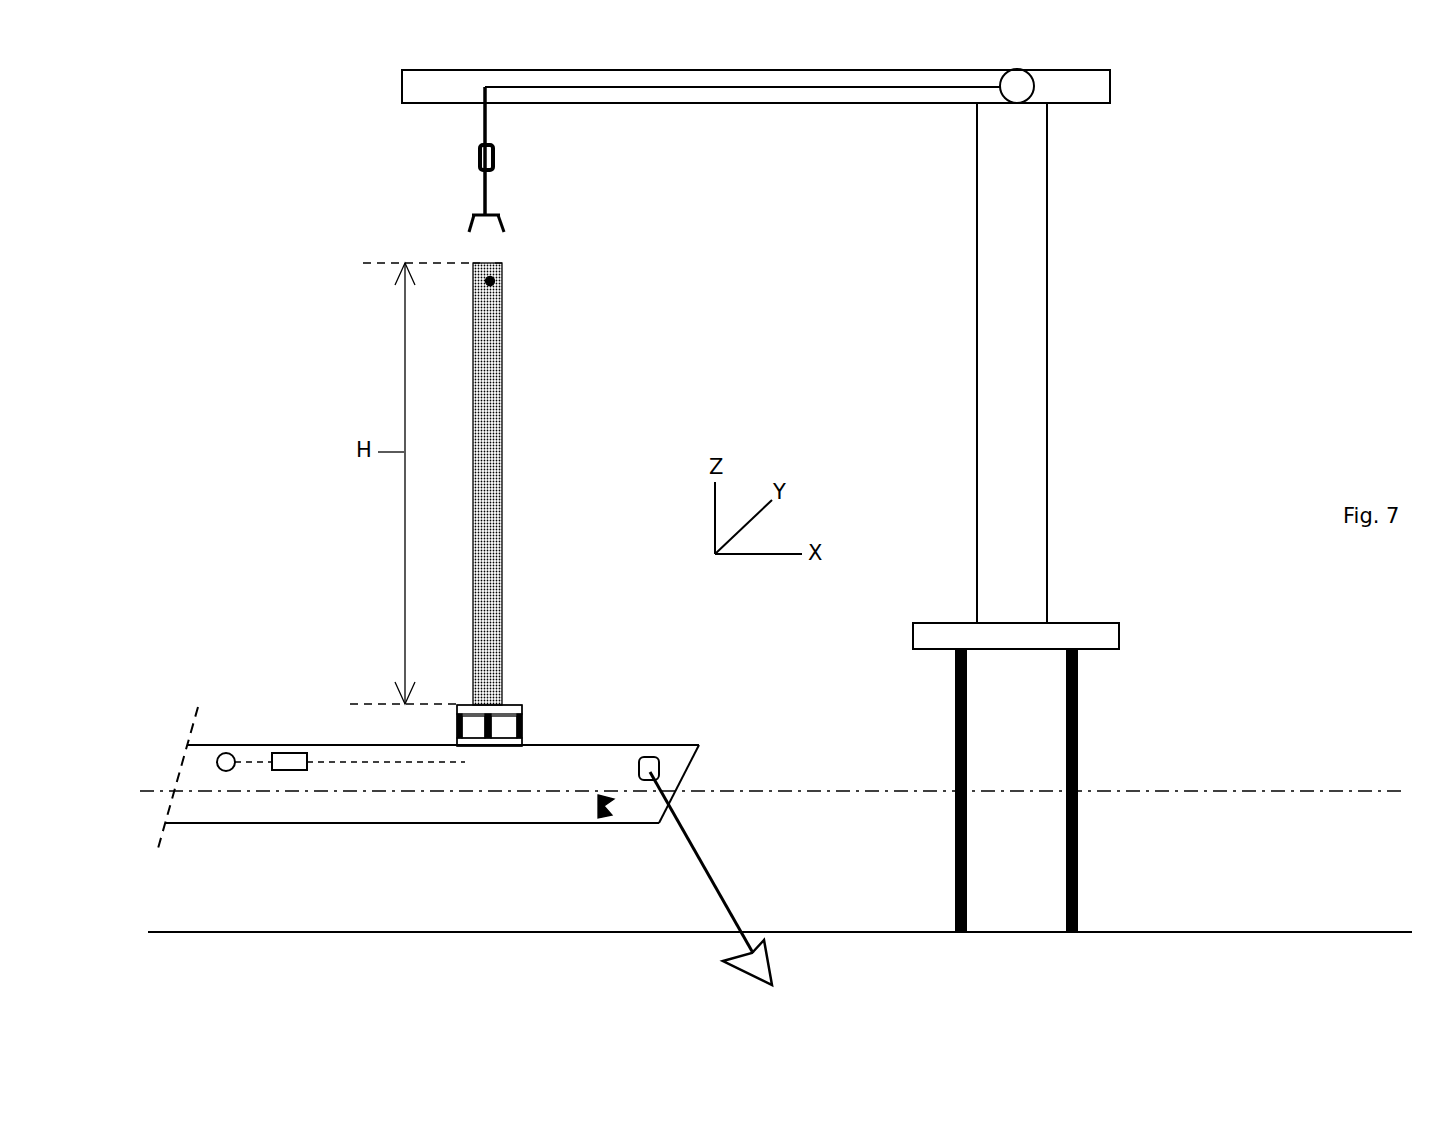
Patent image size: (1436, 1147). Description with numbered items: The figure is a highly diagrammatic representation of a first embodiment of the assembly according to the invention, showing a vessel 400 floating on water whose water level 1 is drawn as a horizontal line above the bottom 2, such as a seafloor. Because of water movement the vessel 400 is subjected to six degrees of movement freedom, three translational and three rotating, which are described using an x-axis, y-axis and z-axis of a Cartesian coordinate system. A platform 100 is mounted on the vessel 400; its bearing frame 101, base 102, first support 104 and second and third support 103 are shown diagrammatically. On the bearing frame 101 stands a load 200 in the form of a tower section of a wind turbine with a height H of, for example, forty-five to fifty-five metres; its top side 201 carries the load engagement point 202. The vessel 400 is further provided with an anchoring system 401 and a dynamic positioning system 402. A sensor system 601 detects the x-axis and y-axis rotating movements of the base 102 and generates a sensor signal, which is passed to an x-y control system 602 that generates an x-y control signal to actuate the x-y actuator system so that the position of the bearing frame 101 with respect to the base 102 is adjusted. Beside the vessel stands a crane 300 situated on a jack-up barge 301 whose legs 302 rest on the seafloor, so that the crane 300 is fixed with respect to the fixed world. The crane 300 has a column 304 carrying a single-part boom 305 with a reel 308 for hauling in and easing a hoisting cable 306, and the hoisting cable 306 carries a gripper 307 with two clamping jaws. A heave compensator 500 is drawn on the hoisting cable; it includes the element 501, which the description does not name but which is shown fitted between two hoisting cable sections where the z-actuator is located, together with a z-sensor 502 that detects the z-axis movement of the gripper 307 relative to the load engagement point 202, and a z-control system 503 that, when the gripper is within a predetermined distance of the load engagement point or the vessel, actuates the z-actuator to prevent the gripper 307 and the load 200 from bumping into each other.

The water level 1 is at (1300, 788).
The bottom 2 is at (1242, 935).
The platform 100 is at (506, 765).
The bearing frame 101 is at (513, 703).
The base 102 is at (563, 711).
The second and third support 103 is at (525, 733).
The first support 104 is at (480, 729).
The load 200 is at (451, 454).
The top side 201 is at (366, 234).
The load engagement point 202 is at (565, 242).
The crane 300 is at (842, 500).
The jack-up barge 301 is at (1107, 630).
The legs 302 is at (1078, 717).
The column 304 is at (1048, 228).
The single-part boom 305 is at (1102, 87).
The hoisting cable 306 is at (742, 88).
The gripper 307 is at (507, 217).
The reel 308 is at (1118, 110).
The vessel 400 is at (508, 779).
The anchoring system 401 is at (763, 968).
The dynamic positioning system 402 is at (639, 846).
The heave compensator 500 is at (476, 159).
The cable sensor housing 501 is at (490, 158).
The z-sensor 502 is at (495, 281).
The z-control system 503 is at (565, 153).
The sensor system 601 is at (188, 704).
The x-y control system 602 is at (234, 672).